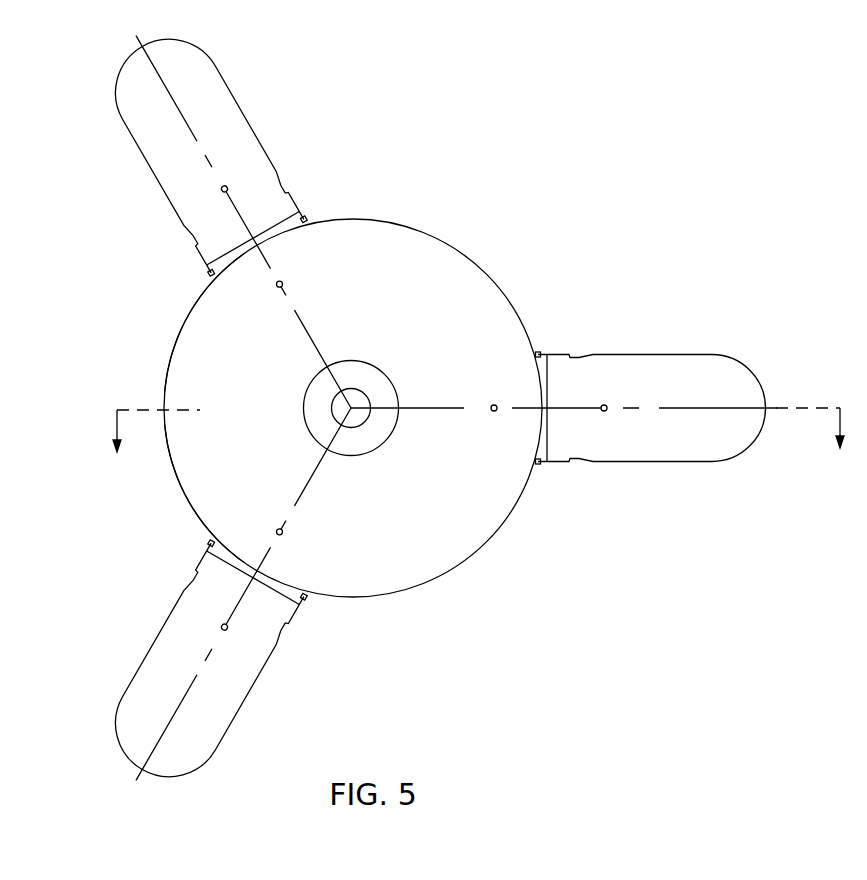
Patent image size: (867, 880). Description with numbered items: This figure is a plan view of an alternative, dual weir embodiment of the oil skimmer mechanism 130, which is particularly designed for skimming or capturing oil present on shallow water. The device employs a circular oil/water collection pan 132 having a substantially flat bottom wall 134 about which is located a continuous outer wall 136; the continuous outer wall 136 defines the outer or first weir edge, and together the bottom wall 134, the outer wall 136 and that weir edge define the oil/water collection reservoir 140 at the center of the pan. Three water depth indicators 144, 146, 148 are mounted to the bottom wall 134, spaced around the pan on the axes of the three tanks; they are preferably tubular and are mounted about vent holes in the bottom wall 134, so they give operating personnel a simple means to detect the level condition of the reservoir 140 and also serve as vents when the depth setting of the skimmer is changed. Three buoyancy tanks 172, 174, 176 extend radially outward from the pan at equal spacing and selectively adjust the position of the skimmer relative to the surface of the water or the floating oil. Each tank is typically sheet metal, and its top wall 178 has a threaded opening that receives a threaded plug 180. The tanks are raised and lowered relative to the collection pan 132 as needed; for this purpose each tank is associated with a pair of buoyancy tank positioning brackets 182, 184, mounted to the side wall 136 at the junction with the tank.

The oil skimmer mechanism 130 is at (566, 187).
The oil/water collection pan 132 is at (468, 570).
The bottom wall 134 is at (205, 328).
The continuous outer wall 136 is at (205, 514).
The oil/water collection reservoir 140 is at (363, 523).
The water depth indicator 144 is at (283, 285).
The water depth indicator 146 is at (494, 413).
The water depth indicator 148 is at (280, 531).
The buoyancy tank 172 is at (220, 102).
The buoyancy tank 174 is at (682, 370).
The buoyancy tank 176 is at (170, 660).
The top wall 178 is at (662, 444).
The threaded plug 180 is at (603, 403).
The buoyancy tank positioning bracket 182 is at (538, 351).
The buoyancy tank positioning bracket 184 is at (538, 466).